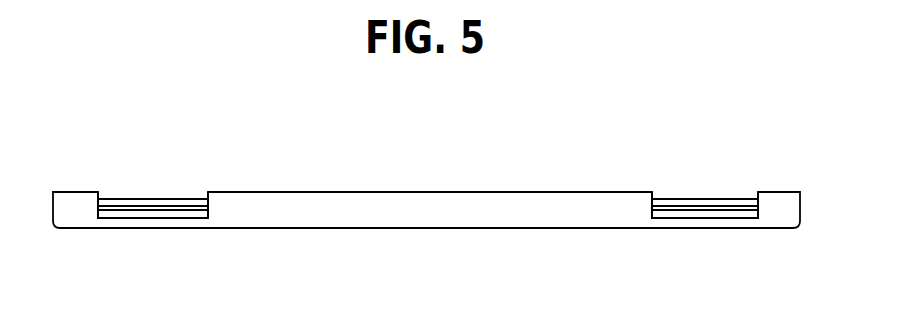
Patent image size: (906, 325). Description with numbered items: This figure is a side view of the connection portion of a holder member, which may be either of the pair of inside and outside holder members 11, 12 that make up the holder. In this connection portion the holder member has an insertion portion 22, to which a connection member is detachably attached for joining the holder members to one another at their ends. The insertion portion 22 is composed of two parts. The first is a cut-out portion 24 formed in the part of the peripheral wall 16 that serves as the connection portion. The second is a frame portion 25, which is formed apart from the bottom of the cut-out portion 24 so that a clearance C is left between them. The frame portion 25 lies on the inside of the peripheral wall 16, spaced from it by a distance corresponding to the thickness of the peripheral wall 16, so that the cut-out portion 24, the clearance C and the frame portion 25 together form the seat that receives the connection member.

The inside holder member 11 is at (426, 173).
The outside holder member 12 is at (416, 186).
The peripheral wall 16 is at (482, 218).
The insertion portion 22 is at (166, 190).
The cut-out portion 24 is at (134, 217).
The frame portion 25 is at (128, 198).
The clearance C is at (183, 218).